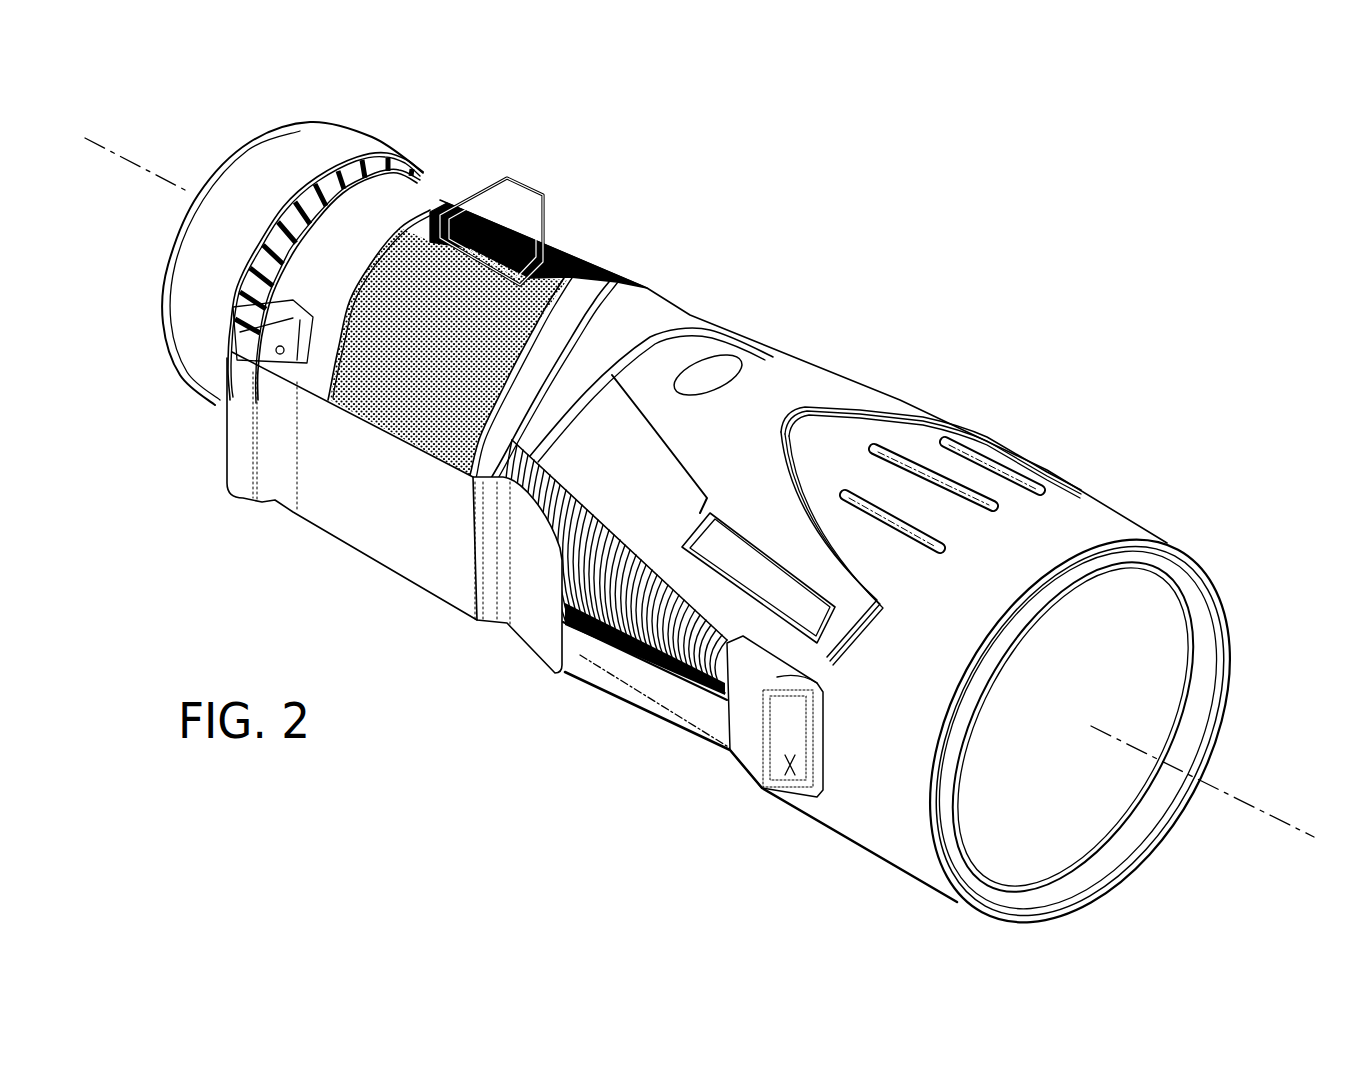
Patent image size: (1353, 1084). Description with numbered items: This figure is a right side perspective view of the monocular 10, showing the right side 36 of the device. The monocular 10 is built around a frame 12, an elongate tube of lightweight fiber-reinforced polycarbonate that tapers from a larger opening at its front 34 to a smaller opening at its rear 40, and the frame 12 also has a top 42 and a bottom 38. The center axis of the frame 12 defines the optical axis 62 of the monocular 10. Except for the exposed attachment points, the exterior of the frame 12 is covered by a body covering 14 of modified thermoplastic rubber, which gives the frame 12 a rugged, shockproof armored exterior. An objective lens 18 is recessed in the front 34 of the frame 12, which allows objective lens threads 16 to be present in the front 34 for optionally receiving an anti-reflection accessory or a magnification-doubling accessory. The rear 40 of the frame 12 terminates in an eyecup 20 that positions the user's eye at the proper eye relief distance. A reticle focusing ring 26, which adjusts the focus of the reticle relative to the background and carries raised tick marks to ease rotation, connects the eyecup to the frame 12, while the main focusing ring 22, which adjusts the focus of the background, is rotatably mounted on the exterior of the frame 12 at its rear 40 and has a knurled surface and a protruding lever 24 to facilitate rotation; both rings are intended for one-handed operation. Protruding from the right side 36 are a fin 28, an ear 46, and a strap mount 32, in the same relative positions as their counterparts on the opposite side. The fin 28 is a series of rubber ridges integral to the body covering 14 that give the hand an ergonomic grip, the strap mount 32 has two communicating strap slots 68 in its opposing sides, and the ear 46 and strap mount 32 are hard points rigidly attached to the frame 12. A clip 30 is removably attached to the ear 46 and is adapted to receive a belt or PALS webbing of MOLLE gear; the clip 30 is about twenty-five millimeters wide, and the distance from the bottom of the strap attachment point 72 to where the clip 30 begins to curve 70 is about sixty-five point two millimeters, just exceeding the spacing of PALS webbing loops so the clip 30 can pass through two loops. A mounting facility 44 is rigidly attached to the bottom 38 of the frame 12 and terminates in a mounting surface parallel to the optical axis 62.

The monocular 10 is at (806, 186).
The frame 12 is at (773, 393).
The body covering 14 is at (990, 463).
The objective lens threads 16 is at (1227, 676).
The objective lens 18 is at (1121, 688).
The eyecup 20 is at (323, 118).
The main focusing ring 22 is at (445, 185).
The protruding lever 24 is at (541, 225).
The reticle focusing ring 26 is at (382, 150).
The fin 28 is at (563, 625).
The clip 30 is at (273, 473).
The strap mount 32 is at (821, 795).
The front 34 is at (1064, 911).
The right side 36 is at (903, 782).
The bottom 38 is at (933, 890).
The rear 40 is at (262, 137).
The top 42 is at (843, 437).
The mounting facility 44 is at (587, 683).
The ear 46 is at (233, 303).
The optical axis 62 is at (125, 162).
The strap slots 68 is at (727, 710).
The where the clip begins to curve 70 is at (253, 365).
The strap attachment point 72 is at (466, 483).